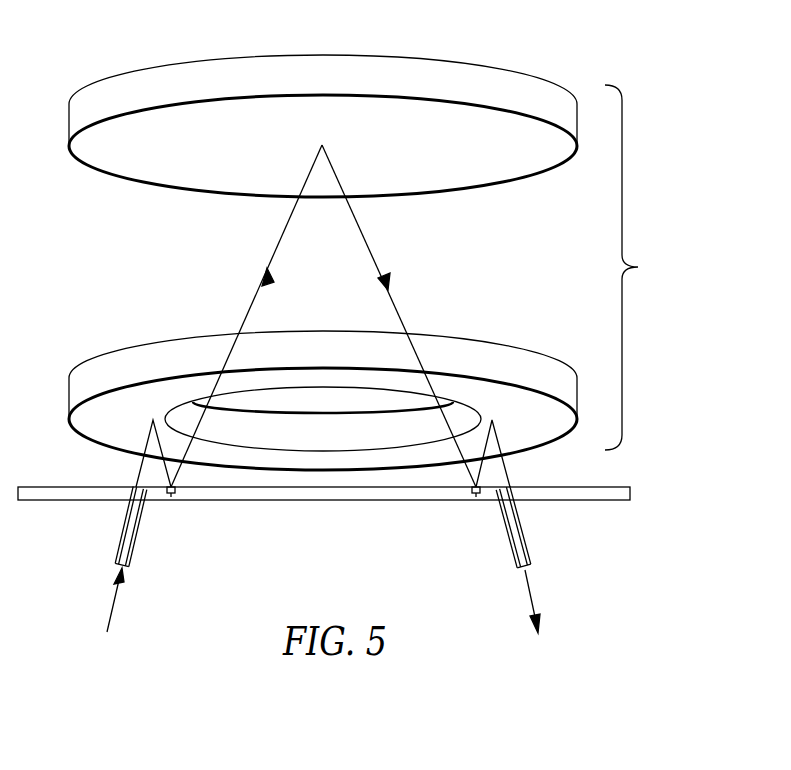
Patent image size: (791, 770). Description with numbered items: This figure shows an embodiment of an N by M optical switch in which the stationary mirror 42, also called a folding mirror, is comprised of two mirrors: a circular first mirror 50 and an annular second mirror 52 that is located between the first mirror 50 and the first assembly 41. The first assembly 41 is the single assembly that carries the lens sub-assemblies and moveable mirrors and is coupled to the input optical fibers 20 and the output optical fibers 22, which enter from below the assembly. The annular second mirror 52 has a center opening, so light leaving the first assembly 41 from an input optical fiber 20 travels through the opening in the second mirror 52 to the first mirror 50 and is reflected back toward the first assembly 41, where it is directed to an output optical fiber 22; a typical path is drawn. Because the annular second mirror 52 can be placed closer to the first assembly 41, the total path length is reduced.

The first mirror 50 is at (502, 68).
The annular second mirror 52 is at (530, 350).
The stationary mirror 42 is at (636, 267).
The first assembly 41 is at (630, 494).
The input optical fiber 20 is at (137, 545).
The output optical fiber 22 is at (530, 552).